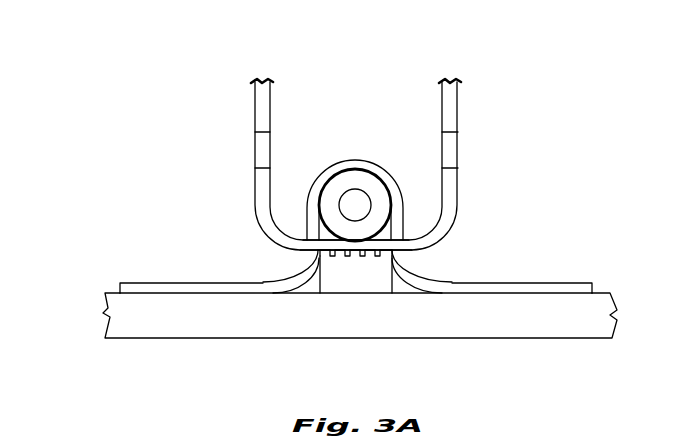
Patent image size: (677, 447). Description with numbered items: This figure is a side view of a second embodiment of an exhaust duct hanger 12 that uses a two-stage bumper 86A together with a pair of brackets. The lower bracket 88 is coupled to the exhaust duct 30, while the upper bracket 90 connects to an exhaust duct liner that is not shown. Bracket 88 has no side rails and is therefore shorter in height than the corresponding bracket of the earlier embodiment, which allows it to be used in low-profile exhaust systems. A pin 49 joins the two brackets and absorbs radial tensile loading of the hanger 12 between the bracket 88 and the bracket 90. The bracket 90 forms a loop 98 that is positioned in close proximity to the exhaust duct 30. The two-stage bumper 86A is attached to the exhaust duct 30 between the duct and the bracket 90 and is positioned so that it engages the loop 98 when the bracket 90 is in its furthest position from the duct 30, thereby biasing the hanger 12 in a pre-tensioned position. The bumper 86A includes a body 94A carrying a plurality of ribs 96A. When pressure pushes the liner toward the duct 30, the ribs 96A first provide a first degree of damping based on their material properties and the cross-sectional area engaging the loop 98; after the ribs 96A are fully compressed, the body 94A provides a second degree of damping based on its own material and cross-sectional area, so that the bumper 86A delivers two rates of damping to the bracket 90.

The exhaust duct hanger 12 is at (190, 166).
The exhaust duct 30 is at (192, 324).
The pin 49 is at (354, 183).
The two-stage bumper 86A is at (358, 283).
The bracket 88 is at (545, 272).
The bracket 90 is at (466, 112).
The body 94A is at (380, 277).
The ribs 96A is at (329, 268).
The loop 98 is at (433, 236).